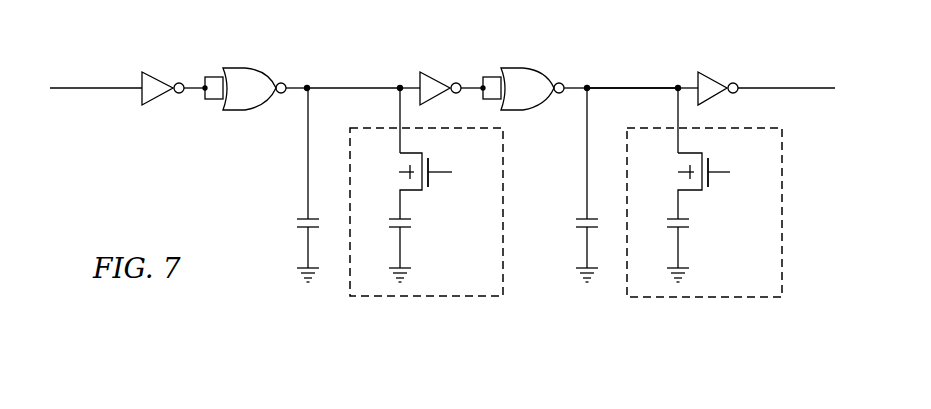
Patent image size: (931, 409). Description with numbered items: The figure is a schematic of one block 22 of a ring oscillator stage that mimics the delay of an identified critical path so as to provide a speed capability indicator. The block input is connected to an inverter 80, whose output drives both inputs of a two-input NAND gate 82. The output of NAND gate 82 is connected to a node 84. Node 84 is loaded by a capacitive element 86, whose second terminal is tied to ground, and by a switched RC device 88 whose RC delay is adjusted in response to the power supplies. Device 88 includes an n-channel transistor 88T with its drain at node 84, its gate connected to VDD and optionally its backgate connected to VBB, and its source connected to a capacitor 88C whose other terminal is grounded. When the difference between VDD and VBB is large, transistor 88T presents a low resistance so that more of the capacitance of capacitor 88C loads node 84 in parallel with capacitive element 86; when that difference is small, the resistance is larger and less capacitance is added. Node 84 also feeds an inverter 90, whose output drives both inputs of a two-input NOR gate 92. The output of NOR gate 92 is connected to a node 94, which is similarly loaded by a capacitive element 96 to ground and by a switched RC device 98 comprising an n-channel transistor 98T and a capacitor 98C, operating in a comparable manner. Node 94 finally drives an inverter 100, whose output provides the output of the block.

The block 22 is at (812, 65).
The inverter 80 is at (160, 79).
The NAND gate 82 is at (244, 67).
The node 84 is at (361, 86).
The capacitive element 86 is at (297, 225).
The switched RC device 88 is at (426, 224).
The n-channel transistor 88T is at (432, 182).
The capacitor 88C is at (407, 297).
The inverter 90 is at (437, 77).
The NOR gate 92 is at (525, 68).
The node 94 is at (637, 86).
The capacitive element 96 is at (575, 225).
The switched RC device 98 is at (704, 224).
The n-channel transistor 98T is at (710, 182).
The capacitor 98C is at (693, 223).
The inverter 100 is at (717, 78).